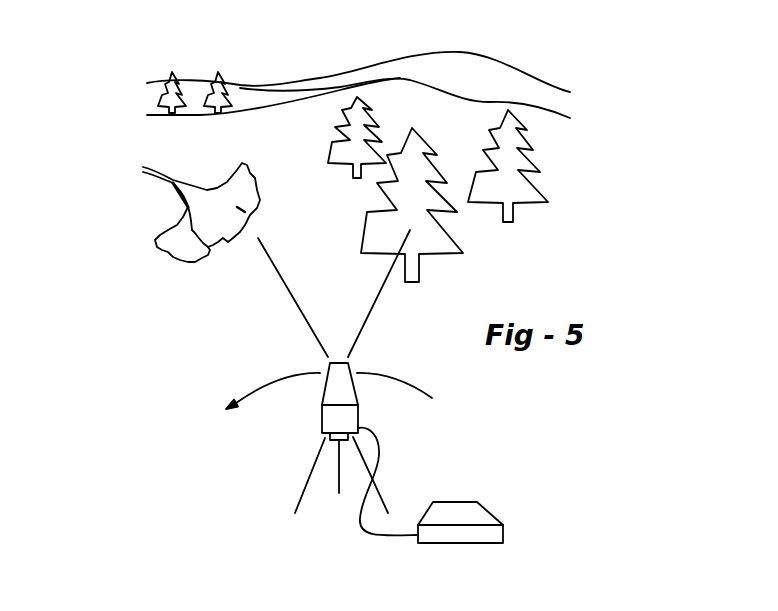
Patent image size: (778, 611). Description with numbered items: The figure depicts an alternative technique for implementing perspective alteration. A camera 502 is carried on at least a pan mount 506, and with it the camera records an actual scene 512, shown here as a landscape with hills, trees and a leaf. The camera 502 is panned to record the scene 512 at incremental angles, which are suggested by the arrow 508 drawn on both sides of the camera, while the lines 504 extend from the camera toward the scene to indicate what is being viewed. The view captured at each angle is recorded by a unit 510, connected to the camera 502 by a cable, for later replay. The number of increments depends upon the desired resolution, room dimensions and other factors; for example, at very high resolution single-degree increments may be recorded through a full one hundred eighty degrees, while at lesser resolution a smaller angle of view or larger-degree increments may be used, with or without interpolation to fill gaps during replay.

The camera 502 is at (330, 392).
The field of view 504 is at (334, 293).
The pan mount 506 is at (323, 453).
The arrow 508 is at (330, 383).
The unit 510 is at (430, 485).
The actual scene 512 is at (130, 53).